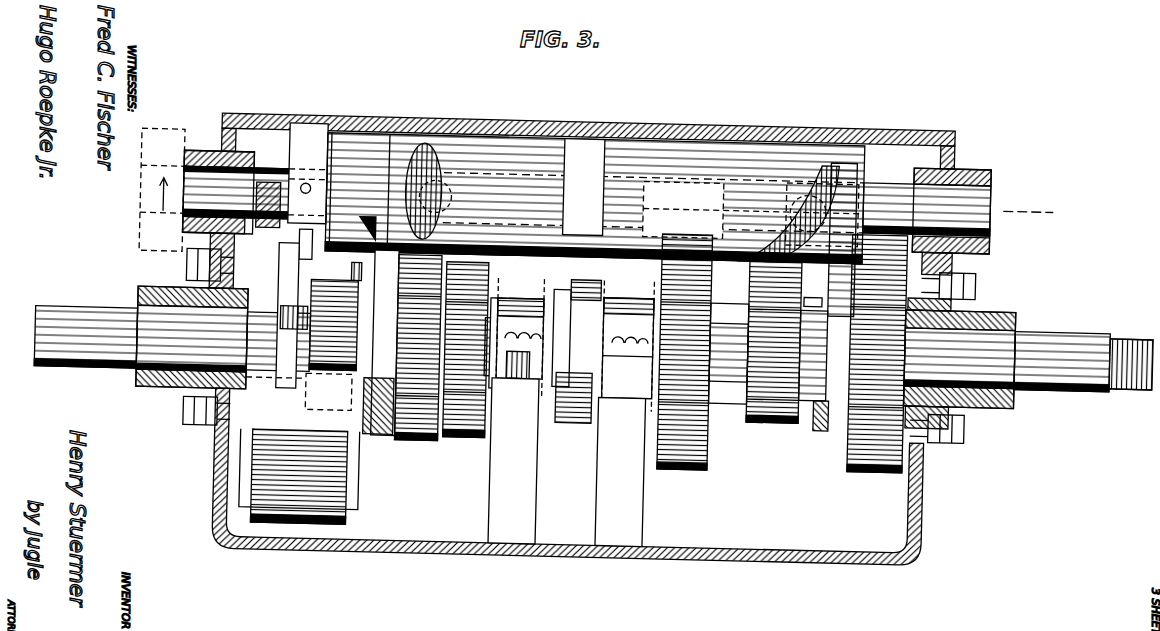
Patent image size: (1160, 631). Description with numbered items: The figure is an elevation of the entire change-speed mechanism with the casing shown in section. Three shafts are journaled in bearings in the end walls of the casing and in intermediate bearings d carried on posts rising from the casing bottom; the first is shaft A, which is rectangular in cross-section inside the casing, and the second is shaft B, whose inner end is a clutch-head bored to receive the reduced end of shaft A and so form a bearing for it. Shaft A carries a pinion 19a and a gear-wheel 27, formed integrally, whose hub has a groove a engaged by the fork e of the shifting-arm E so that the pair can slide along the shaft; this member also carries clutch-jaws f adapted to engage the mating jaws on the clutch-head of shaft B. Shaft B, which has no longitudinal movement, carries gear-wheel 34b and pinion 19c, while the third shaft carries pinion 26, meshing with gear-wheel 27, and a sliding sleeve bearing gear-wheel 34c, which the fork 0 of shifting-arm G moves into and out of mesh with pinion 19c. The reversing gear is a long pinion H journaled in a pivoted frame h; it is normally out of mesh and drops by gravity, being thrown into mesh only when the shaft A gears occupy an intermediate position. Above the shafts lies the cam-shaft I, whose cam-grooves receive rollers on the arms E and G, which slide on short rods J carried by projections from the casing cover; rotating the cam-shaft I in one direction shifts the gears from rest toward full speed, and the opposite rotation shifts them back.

The shaft A is at (291, 374).
The cam-shaft I is at (500, 150).
The short rods J is at (640, 200).
The shifting-arm E is at (385, 182).
The shifting-arm G is at (830, 266).
The fork 0 is at (813, 294).
The shaft B is at (1003, 383).
The pinion 19a is at (342, 267).
The fork e is at (376, 340).
The groove a is at (353, 402).
The gear-wheel 27 is at (418, 444).
The pinion 26 is at (470, 440).
The clutch-jaws f is at (500, 300).
The intermediate bearings d is at (532, 300).
The gear-wheel 34b is at (686, 467).
The pinion 19c is at (775, 418).
The gear-wheel 34c is at (874, 465).
The long pinion H is at (352, 520).
The frame h is at (352, 487).